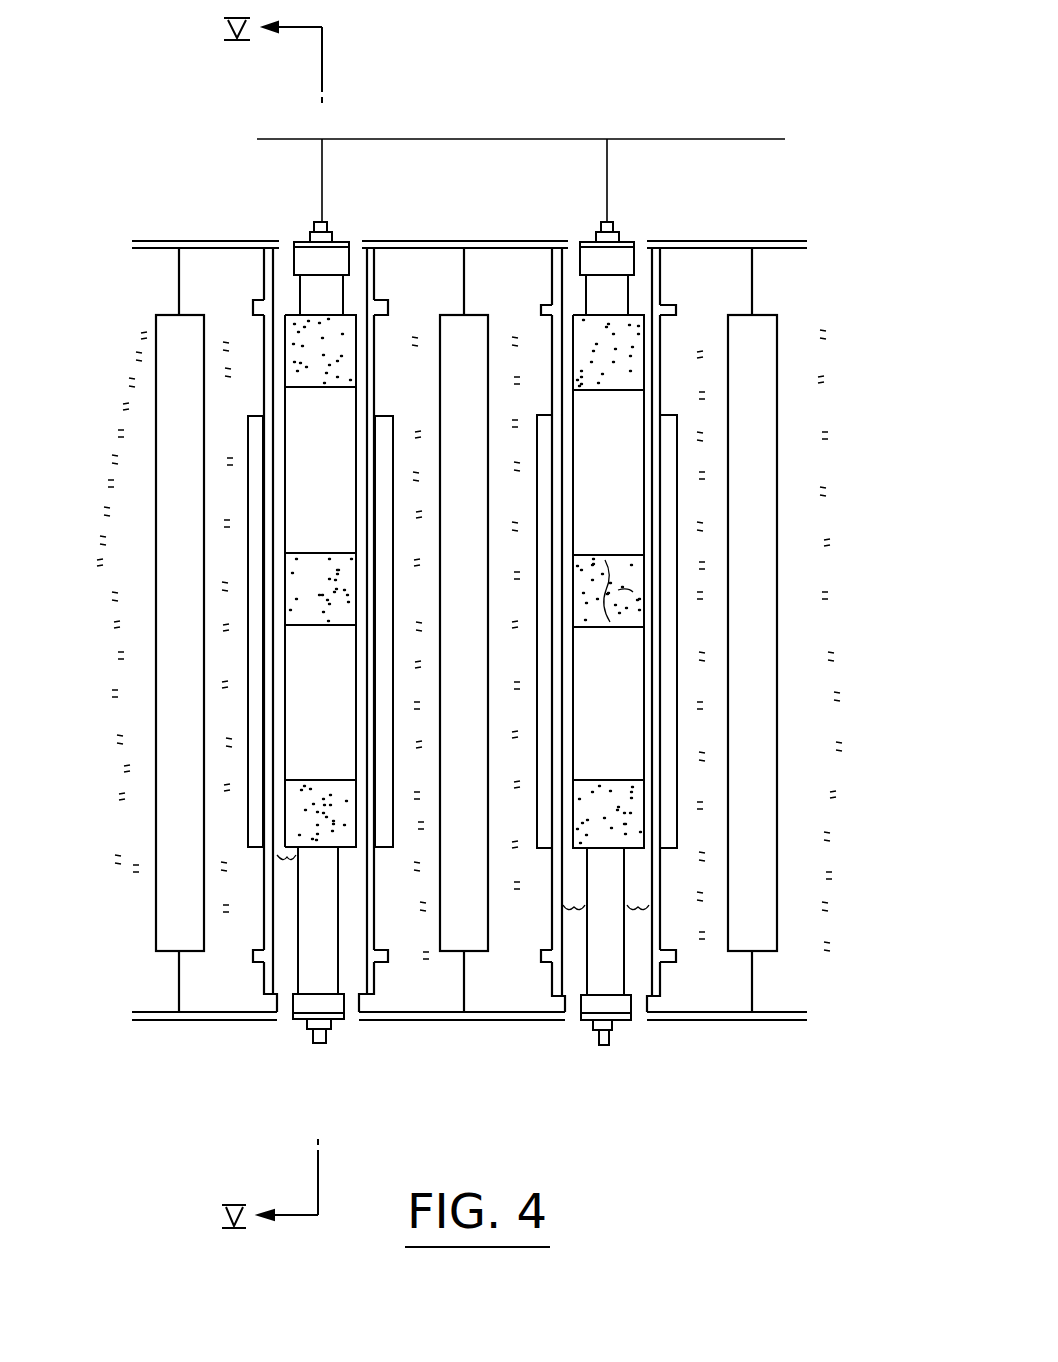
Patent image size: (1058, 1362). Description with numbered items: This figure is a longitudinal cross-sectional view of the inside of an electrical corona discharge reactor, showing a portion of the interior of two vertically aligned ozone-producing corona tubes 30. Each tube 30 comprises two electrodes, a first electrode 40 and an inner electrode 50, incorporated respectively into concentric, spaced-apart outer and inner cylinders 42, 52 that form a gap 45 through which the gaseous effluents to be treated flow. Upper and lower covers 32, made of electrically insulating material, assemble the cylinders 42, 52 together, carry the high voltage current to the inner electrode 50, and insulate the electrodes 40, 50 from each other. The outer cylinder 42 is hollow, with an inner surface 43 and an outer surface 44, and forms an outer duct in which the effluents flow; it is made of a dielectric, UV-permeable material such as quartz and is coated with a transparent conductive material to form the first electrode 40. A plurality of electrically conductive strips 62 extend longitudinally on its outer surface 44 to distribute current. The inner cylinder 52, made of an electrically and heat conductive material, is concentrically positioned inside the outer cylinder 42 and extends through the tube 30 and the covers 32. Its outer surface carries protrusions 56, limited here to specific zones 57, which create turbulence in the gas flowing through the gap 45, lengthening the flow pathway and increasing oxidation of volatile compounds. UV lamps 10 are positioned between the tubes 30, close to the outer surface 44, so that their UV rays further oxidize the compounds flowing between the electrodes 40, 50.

The UV lamp 10 is at (166, 597).
The corona tube 30 is at (348, 234).
The cover 32 is at (272, 255).
The first electrode 40 is at (255, 856).
The outer cylinder 42 is at (263, 938).
The inner surface 43 is at (348, 896).
The outer surface 44 is at (380, 940).
The gap 45 is at (288, 866).
The inner electrode 50 is at (333, 977).
The inner cylinder 52 is at (283, 736).
The protrusions 56 is at (340, 600).
The zones 57 is at (636, 600).
The electrically conductive strips 62 is at (258, 416).